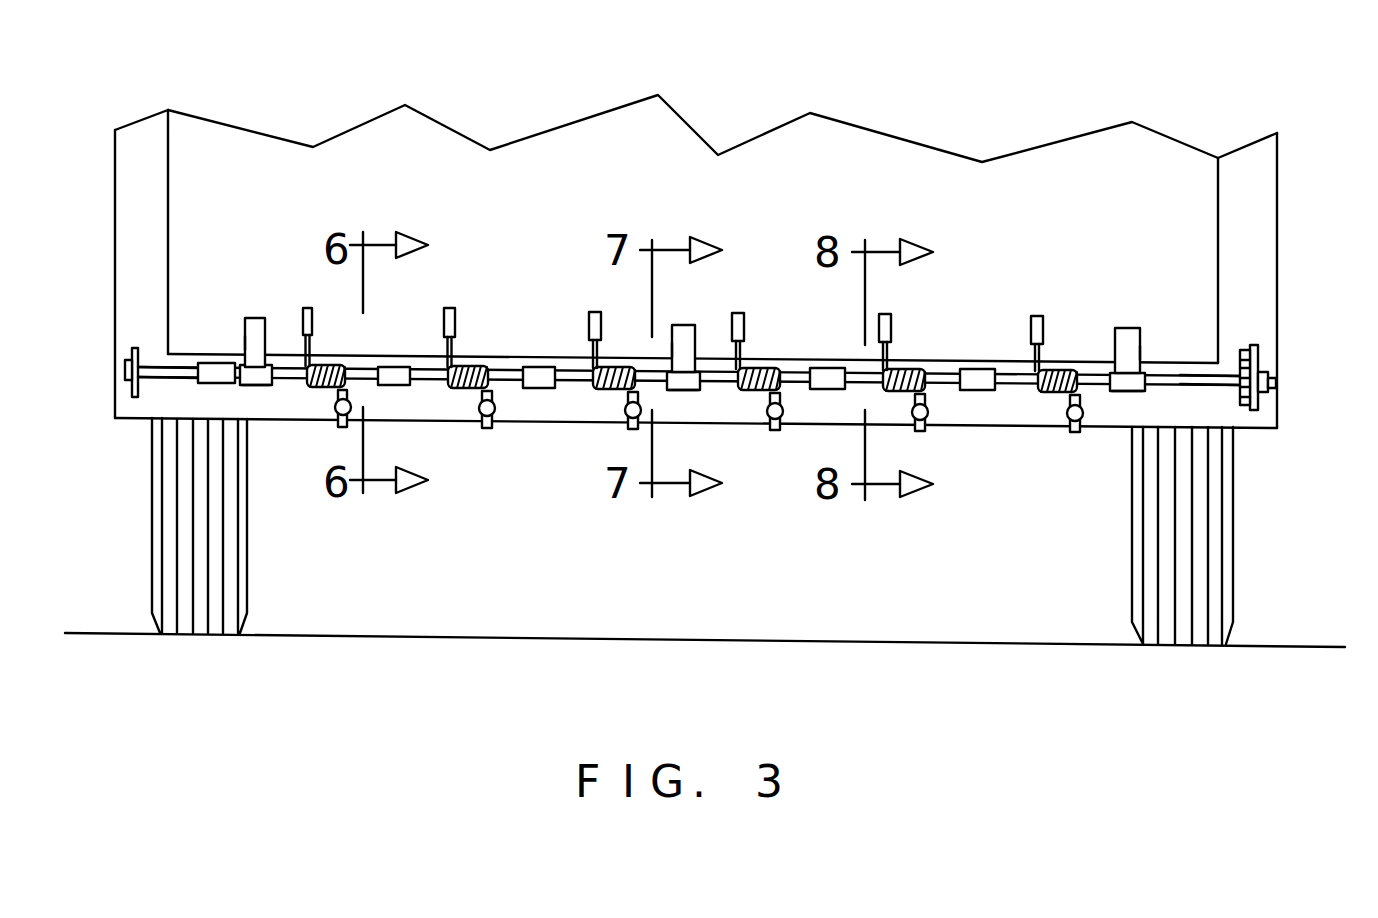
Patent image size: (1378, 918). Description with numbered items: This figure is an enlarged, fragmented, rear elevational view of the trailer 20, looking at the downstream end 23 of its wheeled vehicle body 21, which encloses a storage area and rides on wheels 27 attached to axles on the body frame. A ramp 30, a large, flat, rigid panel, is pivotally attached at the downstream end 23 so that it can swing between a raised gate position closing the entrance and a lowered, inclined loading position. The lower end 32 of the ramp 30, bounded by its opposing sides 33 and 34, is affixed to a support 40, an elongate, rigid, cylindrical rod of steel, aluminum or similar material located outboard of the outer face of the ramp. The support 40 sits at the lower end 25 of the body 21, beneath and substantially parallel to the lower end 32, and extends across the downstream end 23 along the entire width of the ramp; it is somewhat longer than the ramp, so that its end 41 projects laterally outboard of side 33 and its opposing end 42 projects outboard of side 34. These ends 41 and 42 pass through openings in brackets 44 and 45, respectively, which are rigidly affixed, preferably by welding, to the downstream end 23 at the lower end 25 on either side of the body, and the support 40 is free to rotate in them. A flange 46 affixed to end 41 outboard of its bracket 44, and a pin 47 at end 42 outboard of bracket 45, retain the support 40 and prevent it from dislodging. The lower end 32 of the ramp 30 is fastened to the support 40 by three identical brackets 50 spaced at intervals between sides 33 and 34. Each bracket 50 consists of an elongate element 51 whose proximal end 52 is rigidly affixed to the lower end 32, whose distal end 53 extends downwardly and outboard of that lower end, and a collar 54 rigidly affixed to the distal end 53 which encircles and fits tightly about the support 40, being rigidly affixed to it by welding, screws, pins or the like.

The trailer 20 is at (973, 77).
The wheeled vehicle body 21 is at (1248, 131).
The downstream end 23 is at (1253, 226).
The lower end 25 is at (1000, 428).
The wheels 27 is at (238, 577).
The ramp 30 is at (690, 125).
The lower end 32 is at (957, 356).
The side 33 is at (168, 218).
The side 34 is at (1220, 287).
The support 40 is at (796, 372).
The end 41 is at (153, 400).
The end 42 is at (1223, 386).
The bracket 44 is at (140, 350).
The bracket 45 is at (1263, 358).
The flange 46 is at (125, 382).
The gear 47 is at (1270, 400).
The bracket 50 is at (280, 327).
The elongate element 51 is at (245, 340).
The proximal end 52 is at (255, 318).
The distal end 53 is at (262, 388).
The collar 54 is at (258, 388).